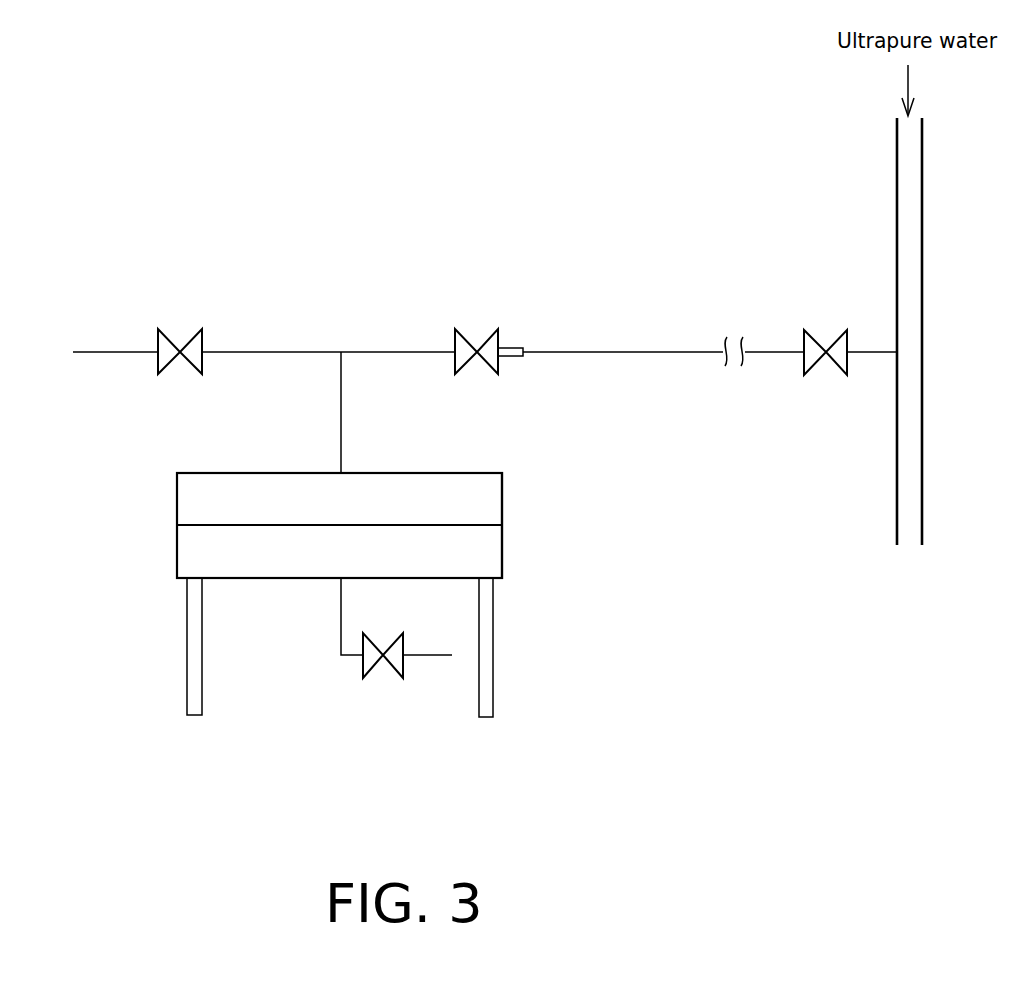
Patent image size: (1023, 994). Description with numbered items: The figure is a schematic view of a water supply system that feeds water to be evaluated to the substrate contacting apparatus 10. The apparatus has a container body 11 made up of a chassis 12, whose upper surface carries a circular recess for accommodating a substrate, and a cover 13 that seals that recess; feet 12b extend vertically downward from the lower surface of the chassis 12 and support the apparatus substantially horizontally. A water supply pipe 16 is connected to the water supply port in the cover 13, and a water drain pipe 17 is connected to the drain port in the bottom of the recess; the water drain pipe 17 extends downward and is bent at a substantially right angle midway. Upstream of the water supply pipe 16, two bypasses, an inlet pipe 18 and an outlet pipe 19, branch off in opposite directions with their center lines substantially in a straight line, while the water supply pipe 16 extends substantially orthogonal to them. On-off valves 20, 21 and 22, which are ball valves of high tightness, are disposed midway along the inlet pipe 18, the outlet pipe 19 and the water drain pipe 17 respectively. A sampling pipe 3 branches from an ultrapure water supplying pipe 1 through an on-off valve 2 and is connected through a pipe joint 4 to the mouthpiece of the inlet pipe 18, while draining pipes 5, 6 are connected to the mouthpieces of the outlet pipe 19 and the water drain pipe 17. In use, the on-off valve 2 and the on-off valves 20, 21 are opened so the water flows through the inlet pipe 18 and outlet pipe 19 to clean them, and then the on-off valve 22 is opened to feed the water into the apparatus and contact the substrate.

The ultrapure water supplying pipe 1 is at (912, 217).
The on-off valve 2 is at (838, 336).
The sampling pipe 3 is at (623, 365).
The pipe joint 4 is at (510, 348).
The draining pipe 5 is at (100, 353).
The draining pipe 6 is at (430, 656).
The substrate contacting apparatus 10 is at (160, 503).
The container body 11 is at (560, 475).
The chassis 12 is at (488, 550).
The feet 12b is at (187, 688).
The cover 13 is at (488, 503).
The water supply pipe 16 is at (341, 433).
The water drain pipe 17 is at (341, 611).
The inlet pipe 18 is at (380, 349).
The outlet pipe 19 is at (268, 349).
The on-off valve 20 is at (477, 330).
The on-off valve 21 is at (172, 336).
The on-off valve 22 is at (373, 675).